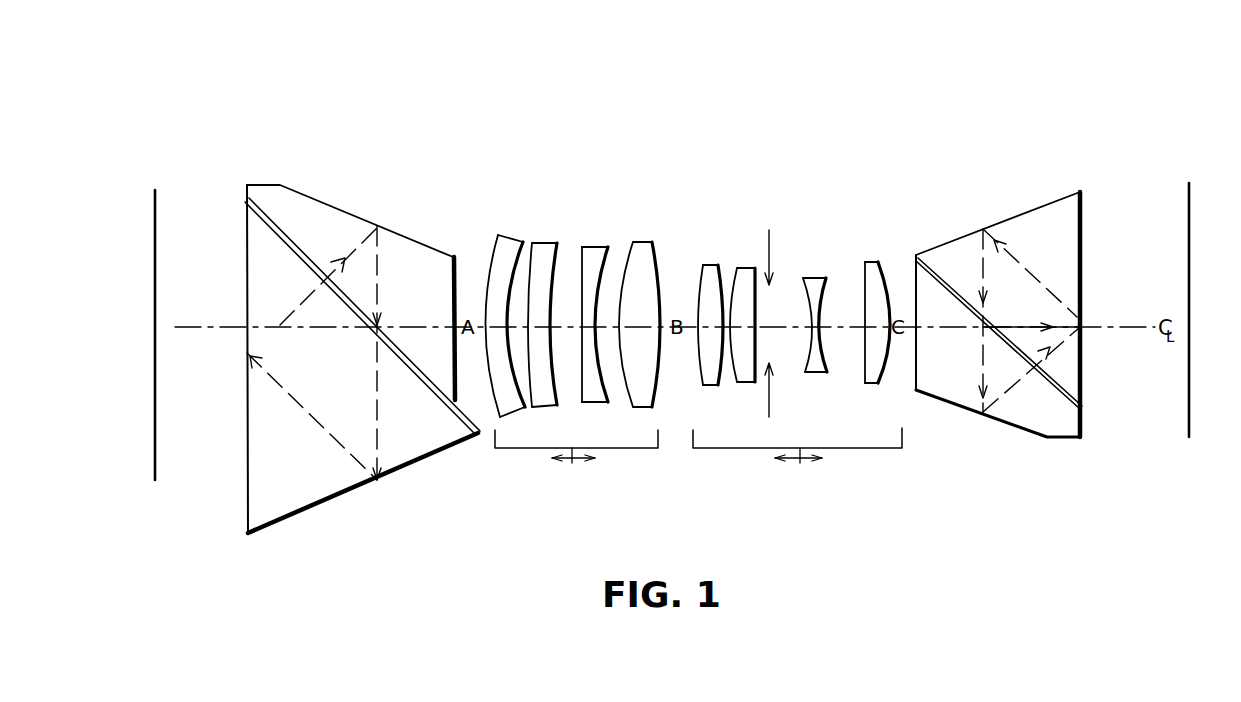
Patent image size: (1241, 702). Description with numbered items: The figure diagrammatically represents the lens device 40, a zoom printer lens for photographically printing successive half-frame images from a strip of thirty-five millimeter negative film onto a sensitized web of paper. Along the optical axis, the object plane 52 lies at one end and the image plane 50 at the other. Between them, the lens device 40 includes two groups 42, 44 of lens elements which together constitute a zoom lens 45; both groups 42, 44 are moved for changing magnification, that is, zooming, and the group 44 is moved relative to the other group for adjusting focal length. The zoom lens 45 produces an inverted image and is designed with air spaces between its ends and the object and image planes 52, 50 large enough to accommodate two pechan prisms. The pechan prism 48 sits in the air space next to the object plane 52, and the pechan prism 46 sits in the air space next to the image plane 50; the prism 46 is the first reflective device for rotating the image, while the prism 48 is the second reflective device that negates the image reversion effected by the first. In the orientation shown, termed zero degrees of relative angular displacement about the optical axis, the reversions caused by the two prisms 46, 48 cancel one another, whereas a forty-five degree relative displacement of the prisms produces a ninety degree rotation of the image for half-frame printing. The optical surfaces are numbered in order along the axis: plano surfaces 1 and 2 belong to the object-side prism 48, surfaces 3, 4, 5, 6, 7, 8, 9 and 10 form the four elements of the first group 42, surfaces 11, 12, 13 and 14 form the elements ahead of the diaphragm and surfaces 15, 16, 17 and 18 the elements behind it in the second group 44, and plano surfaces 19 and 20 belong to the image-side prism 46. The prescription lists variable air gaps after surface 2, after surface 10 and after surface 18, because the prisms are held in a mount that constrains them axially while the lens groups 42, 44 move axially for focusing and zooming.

The surface 1 is at (249, 344).
The surface 2 is at (452, 312).
The surface 3 is at (505, 314).
The surface 4 is at (516, 308).
The surface 5 is at (542, 311).
The surface 6 is at (554, 310).
The surface 7 is at (591, 308).
The surface 8 is at (604, 311).
The surface 9 is at (635, 311).
The surface 10 is at (659, 311).
The surface 11 is at (704, 311).
The surface 12 is at (725, 306).
The surface 13 is at (744, 312).
The surface 14 is at (760, 304).
The surface 15 is at (804, 313).
The surface 16 is at (830, 312).
The surface 17 is at (868, 310).
The surface 18 is at (894, 312).
The surface 19 is at (926, 305).
The surface 20 is at (1074, 303).
The lens device 40 is at (283, 133).
The first group of lens elements 42 is at (637, 448).
The second group of lens elements 44 is at (870, 448).
The zoom lens 45 is at (928, 85).
The pechan prism 46 is at (1047, 440).
The pechan prism 48 is at (337, 500).
The image plane 50 is at (1189, 408).
The object plane 52 is at (155, 458).